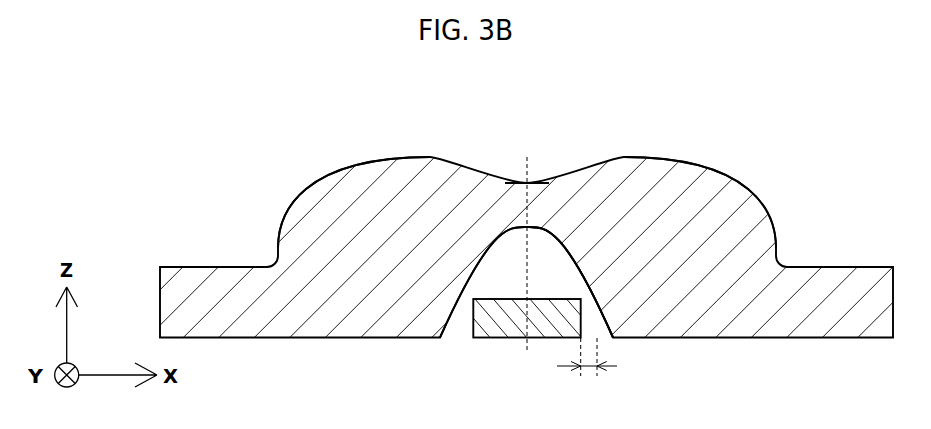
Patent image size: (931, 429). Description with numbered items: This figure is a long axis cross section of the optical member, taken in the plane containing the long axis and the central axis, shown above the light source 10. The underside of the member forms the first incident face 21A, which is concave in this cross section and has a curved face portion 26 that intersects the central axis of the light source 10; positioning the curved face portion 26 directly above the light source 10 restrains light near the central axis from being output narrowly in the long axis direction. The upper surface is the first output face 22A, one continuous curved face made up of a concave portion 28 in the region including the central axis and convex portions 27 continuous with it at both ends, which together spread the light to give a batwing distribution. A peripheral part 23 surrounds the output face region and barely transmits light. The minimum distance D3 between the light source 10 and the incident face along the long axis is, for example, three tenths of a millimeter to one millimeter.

The light source 10 is at (502, 325).
The first incident face 21A is at (577, 257).
The first output face 22A is at (753, 192).
The peripheral part 23 is at (212, 267).
The curved face portion 26 is at (493, 237).
The convex portions 27 is at (373, 157).
The concave portion 28 is at (527, 183).
The minimum distance D3 is at (587, 375).